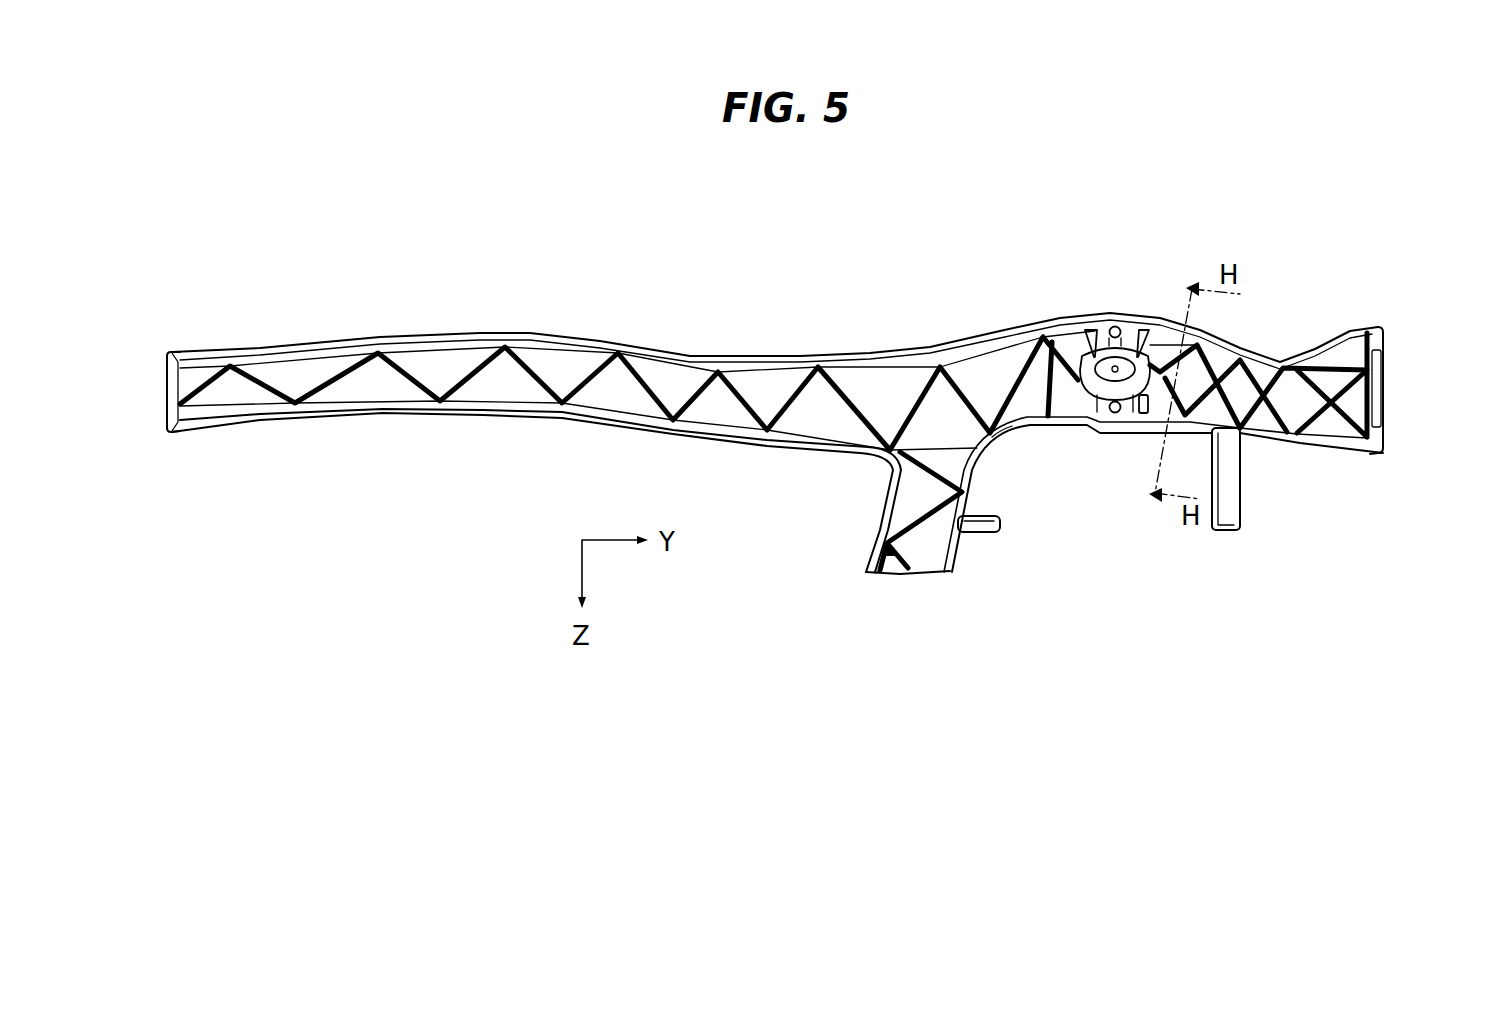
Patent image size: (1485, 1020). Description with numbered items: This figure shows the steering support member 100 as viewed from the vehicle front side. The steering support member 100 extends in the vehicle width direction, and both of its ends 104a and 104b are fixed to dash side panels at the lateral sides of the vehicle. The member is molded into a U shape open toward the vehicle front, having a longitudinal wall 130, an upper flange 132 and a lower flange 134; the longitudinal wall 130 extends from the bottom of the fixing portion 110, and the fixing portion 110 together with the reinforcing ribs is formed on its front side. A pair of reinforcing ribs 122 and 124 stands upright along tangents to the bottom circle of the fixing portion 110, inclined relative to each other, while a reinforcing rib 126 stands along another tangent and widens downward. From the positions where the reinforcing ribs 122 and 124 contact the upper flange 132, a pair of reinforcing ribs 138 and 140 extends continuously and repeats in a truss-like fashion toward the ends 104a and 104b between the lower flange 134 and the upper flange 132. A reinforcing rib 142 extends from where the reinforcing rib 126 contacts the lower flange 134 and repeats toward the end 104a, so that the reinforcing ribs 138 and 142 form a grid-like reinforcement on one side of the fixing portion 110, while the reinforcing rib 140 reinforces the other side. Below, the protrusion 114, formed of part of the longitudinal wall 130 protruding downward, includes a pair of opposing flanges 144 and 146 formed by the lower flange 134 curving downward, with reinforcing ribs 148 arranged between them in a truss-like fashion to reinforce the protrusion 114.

The steering support member 100 is at (739, 285).
The end 104a is at (1387, 390).
The end 104b is at (171, 392).
The fixing portion 110 is at (1110, 392).
The protrusion 114 is at (890, 574).
The reinforcing rib 122 is at (1158, 362).
The reinforcing rib 124 is at (1068, 362).
The reinforcing rib 126 is at (1143, 416).
The longitudinal wall 130 is at (880, 395).
The upper flange 132 is at (1098, 328).
The lower flange 134 is at (1033, 428).
The reinforcing rib 138 is at (1223, 358).
The reinforcing rib 140 is at (1005, 388).
The reinforcing rib 142 is at (1236, 432).
The flange 144 is at (960, 553).
The flange 146 is at (880, 518).
The reinforcing ribs 148 is at (928, 480).